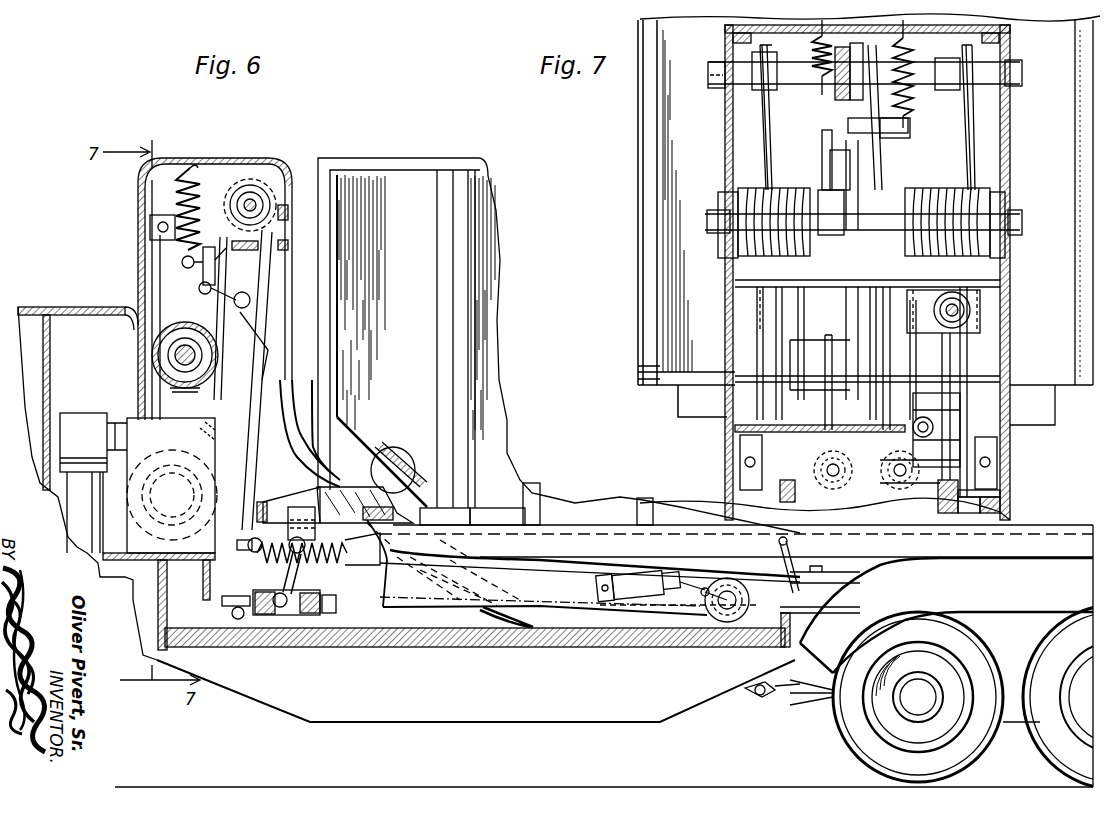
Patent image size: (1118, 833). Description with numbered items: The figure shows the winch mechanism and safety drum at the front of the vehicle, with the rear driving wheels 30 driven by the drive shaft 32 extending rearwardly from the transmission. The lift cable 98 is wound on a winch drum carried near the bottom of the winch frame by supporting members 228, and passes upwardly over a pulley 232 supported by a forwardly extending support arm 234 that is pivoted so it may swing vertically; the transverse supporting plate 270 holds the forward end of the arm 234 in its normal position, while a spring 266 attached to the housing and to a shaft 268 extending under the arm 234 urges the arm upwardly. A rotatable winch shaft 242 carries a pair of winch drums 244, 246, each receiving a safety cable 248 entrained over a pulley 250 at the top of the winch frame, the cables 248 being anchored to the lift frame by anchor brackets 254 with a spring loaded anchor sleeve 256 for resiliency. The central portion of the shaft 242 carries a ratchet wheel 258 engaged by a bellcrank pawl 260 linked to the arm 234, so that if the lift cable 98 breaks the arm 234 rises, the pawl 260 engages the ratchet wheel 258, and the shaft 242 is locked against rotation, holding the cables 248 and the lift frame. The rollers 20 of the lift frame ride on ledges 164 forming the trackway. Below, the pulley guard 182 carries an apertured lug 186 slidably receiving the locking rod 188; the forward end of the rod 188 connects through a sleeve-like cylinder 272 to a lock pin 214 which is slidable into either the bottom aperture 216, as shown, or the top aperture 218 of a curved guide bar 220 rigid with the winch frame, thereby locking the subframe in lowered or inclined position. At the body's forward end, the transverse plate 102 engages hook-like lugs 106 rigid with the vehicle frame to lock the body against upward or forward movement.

In FIG. 7, the rollers 20 is at (1001, 490).
In FIG. 6, the rear driving wheels 30 is at (842, 730).
In FIG. 6, the drive shaft 32 is at (746, 690).
In FIG. 7, the lift cable 98 is at (852, 272).
In FIG. 6, the transverse plate 102 is at (388, 510).
In FIG. 6, the hook-like lugs 106 is at (368, 493).
In FIG. 7, the ledges 164 is at (1000, 502).
In FIG. 6, the U-shaped guard 182 is at (288, 508).
In FIG. 6, the apertured lug 186 is at (312, 600).
In FIG. 6, the locking rod 188 is at (367, 581).
In FIG. 6, the lock pin 214 is at (277, 612).
In FIG. 6, the bottom aperture 216 is at (222, 603).
In FIG. 7, the bottom aperture 216 is at (899, 490).
In FIG. 6, the top aperture 218 is at (290, 236).
In FIG. 7, the curved guide bar 220 is at (828, 482).
In FIG. 7, the supporting members 228 is at (824, 342).
In FIG. 6, the pulley 232 is at (257, 185).
In FIG. 7, the pulley 232 is at (852, 42).
In FIG. 6, the support arm 234 is at (208, 215).
In FIG. 6, the winch shaft 242 is at (182, 399).
In FIG. 7, the winch shaft 242 is at (1013, 228).
In FIG. 7, the winch drum 244 is at (935, 188).
In FIG. 6, the winch drum 246 is at (182, 324).
In FIG. 7, the winch drum 246 is at (796, 186).
In FIG. 7, the safety cable 248 is at (771, 135).
In FIG. 7, the pulley 250 is at (975, 90).
In FIG. 6, the anchor bracket 254 is at (598, 584).
In FIG. 6, the spring loaded anchor sleeve 256 is at (646, 598).
In FIG. 7, the ratchet wheel 258 is at (815, 296).
In FIG. 6, the bellcrank pawl 260 is at (236, 328).
In FIG. 6, the spring 266 is at (183, 175).
In FIG. 7, the shaft 268 is at (906, 126).
In FIG. 6, the transverse supporting plate 270 is at (245, 250).
In FIG. 6, the sleeve-like cylinder 272 is at (326, 615).